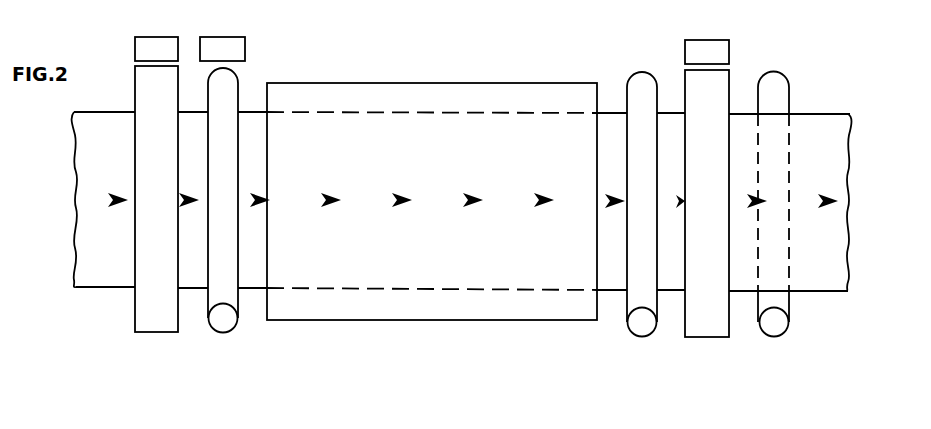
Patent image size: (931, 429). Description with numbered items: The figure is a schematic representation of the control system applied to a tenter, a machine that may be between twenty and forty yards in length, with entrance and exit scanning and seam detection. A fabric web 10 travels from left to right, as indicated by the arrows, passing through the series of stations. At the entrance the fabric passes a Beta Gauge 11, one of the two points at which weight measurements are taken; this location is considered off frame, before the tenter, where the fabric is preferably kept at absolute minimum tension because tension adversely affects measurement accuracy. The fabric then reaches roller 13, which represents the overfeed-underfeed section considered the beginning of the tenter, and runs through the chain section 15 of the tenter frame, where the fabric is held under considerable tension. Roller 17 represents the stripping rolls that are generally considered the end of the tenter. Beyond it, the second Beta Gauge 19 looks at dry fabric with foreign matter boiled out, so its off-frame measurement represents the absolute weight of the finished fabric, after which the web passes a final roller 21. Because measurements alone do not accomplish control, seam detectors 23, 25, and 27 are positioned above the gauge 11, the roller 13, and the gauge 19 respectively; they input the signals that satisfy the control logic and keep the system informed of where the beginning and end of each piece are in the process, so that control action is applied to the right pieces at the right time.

The web 10 is at (108, 281).
The Beta Gauge 11 is at (157, 325).
The roller 13 is at (223, 322).
The chain conveyor 15 is at (378, 322).
The roller 17 is at (641, 326).
The Beta Gauge 19 is at (707, 326).
The third roller 21 is at (774, 326).
The seam detector 23 is at (150, 45).
The seam detector 25 is at (225, 45).
The seam detector 27 is at (703, 48).